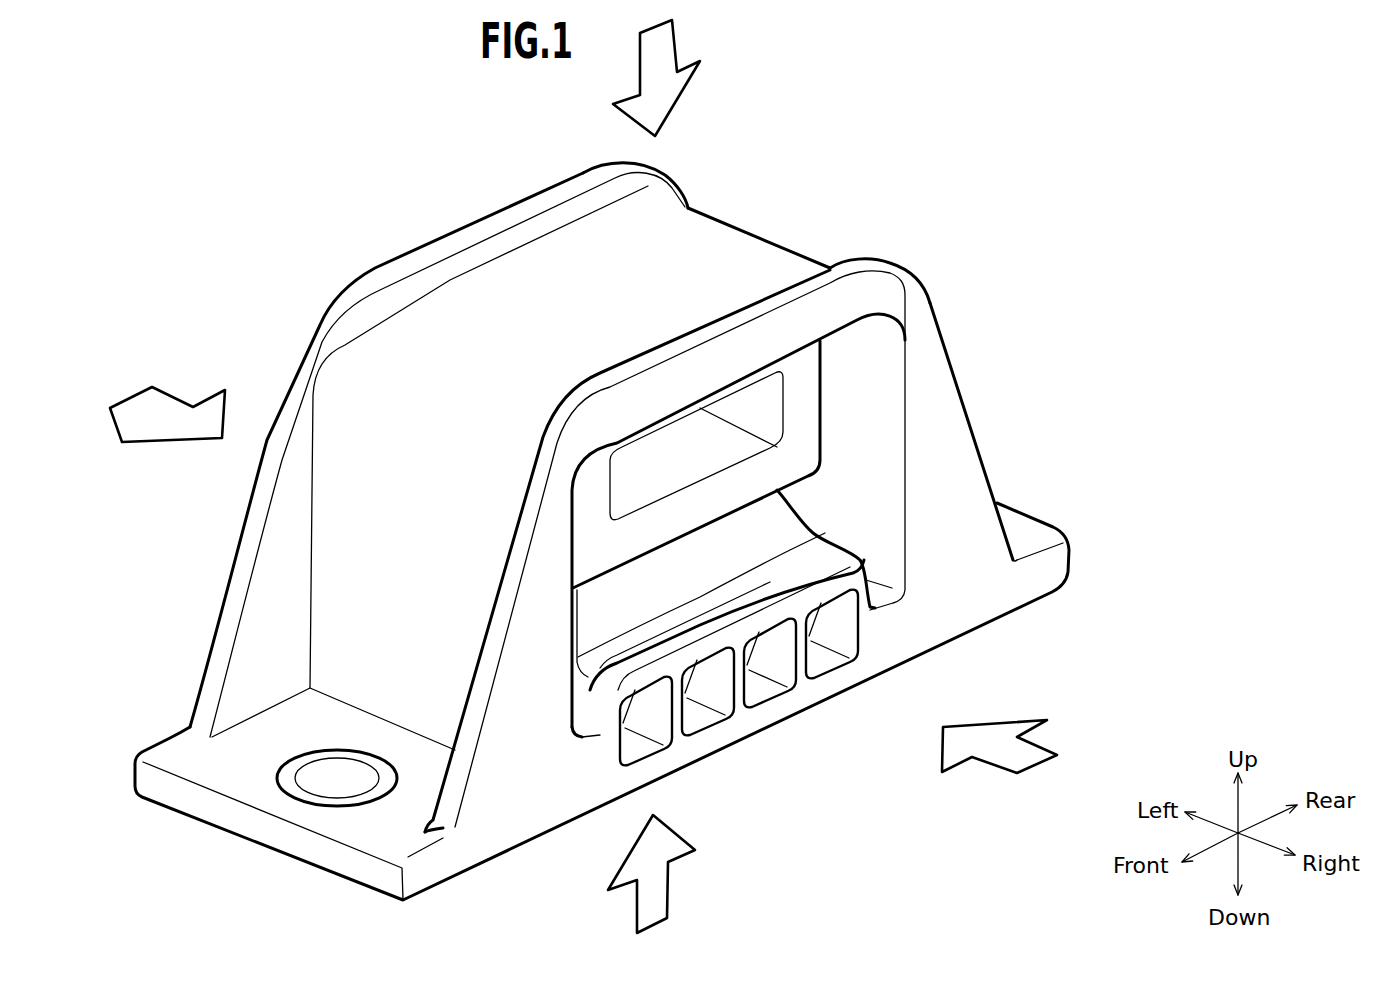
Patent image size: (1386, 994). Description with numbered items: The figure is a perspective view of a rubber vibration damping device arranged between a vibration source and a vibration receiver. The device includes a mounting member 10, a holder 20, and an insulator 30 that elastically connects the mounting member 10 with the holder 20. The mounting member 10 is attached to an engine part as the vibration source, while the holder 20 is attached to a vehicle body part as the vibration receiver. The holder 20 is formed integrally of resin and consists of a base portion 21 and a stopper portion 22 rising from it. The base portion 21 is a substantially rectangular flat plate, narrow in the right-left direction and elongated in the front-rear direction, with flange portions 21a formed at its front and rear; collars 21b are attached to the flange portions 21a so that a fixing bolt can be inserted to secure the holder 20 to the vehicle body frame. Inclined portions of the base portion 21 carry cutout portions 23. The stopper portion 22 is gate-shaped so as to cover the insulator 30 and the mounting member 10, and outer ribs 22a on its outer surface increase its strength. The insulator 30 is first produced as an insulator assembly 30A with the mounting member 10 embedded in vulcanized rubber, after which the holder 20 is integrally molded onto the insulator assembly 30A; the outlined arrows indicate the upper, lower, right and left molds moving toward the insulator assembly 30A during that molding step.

The mounting member 10 is at (800, 380).
The holder 20 is at (960, 302).
The base portion 21 is at (500, 827).
The flange portions 21a is at (1018, 525).
The collars 21b is at (338, 778).
The stopper portion 22 is at (727, 255).
The outer ribs 22a is at (583, 182).
The cutout portions 23 is at (633, 753).
The insulator 30 is at (810, 515).
The insulator assembly 30A is at (840, 410).